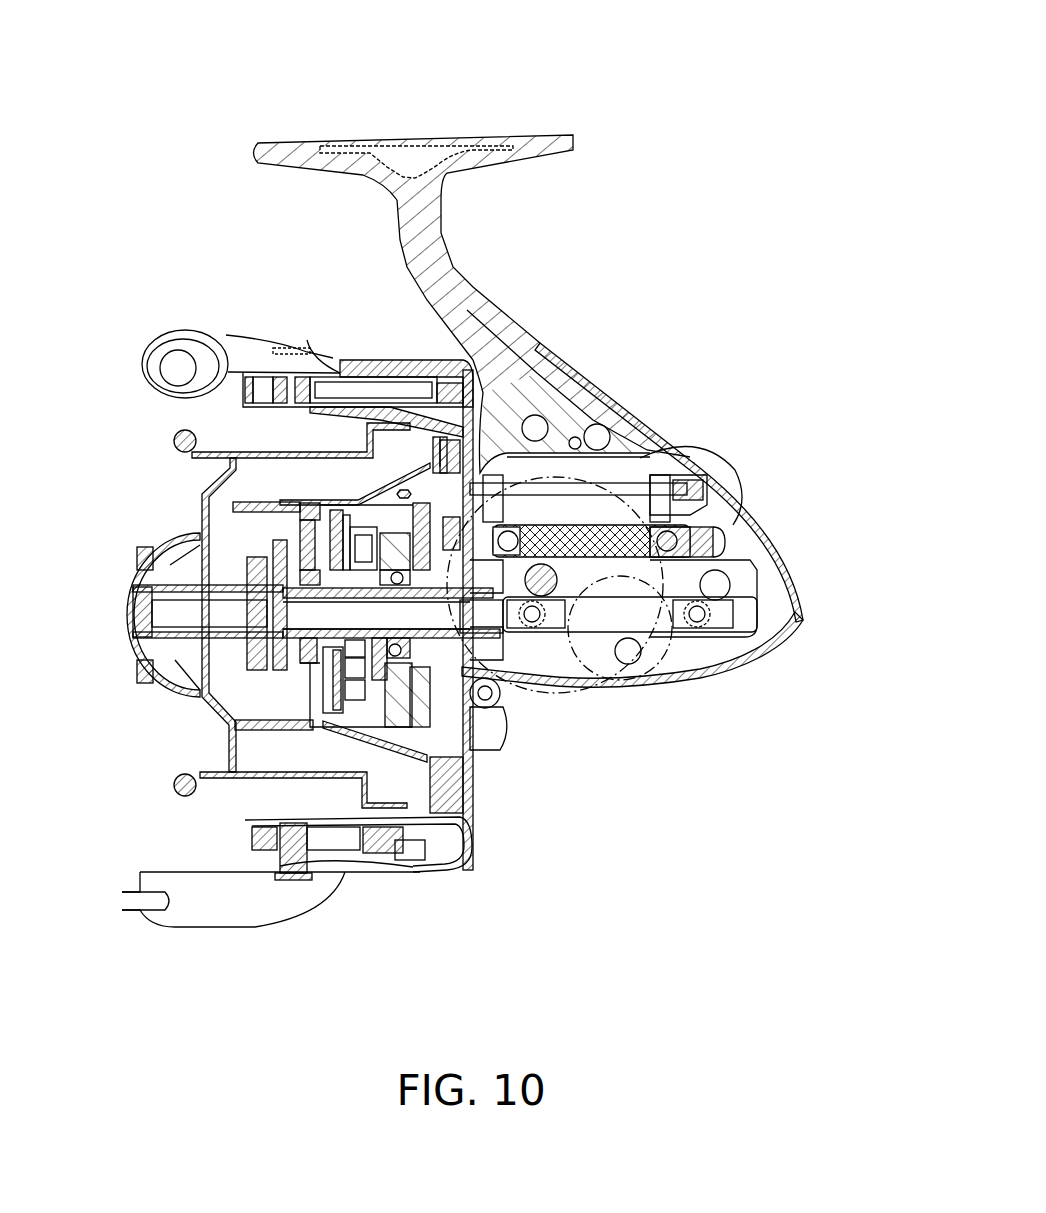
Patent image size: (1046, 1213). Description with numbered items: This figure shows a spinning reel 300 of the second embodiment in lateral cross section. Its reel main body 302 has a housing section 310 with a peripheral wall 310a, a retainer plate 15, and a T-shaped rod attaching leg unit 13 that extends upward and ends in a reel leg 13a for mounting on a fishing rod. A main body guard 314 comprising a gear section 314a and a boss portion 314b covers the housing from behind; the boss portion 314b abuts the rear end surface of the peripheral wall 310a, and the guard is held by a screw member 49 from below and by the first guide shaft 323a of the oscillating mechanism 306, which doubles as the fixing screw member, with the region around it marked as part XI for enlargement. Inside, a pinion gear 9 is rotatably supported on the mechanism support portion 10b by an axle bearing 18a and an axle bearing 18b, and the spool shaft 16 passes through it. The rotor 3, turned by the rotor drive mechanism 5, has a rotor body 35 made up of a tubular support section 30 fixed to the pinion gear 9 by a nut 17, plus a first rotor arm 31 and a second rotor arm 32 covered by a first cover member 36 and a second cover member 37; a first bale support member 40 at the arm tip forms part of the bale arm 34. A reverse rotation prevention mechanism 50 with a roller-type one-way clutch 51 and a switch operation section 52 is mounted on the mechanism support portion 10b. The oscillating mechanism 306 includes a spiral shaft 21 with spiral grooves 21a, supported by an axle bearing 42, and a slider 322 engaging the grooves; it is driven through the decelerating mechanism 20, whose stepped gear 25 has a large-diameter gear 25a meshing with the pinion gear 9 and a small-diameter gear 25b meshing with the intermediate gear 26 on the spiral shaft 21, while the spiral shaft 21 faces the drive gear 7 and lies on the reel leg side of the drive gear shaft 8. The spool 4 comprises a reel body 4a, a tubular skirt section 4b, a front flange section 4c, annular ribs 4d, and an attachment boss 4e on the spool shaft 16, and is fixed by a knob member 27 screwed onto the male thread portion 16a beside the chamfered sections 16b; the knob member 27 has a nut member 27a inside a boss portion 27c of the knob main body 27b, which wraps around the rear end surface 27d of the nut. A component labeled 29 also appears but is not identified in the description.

The spinning reel 300 is at (565, 100).
The reel leg 13a is at (462, 133).
The rod attaching leg unit 13 is at (440, 233).
The reel main body 302 is at (488, 288).
The main body guard 314 is at (599, 367).
The gear section 314a is at (618, 405).
The boss portion 314b is at (695, 445).
The retainer plate 15 is at (773, 540).
The slider 322 is at (693, 480).
The first guide shaft 323a is at (623, 490).
The oscillating mechanism 306 is at (595, 507).
The part XI is at (549, 352).
The stepped gear 25 is at (563, 405).
The large-diameter gear 25a is at (500, 370).
The drive gear 7 is at (600, 690).
The spiral shaft 21 is at (737, 593).
The spiral grooves 21a is at (710, 652).
The screw member 49 is at (683, 660).
The housing section 310 is at (622, 690).
The peripheral wall 310a is at (657, 672).
The drive gear shaft 8 is at (623, 697).
The rotor drive mechanism 5 is at (477, 815).
The rotor body 35 is at (485, 817).
The rotor 3 is at (482, 877).
The spool shaft 16 is at (540, 690).
The switch operation section 52 is at (492, 740).
The axle bearing 18b is at (500, 733).
The pinion gear 9 is at (486, 816).
The axle bearing 18a is at (385, 722).
The bale arm 34 is at (148, 323).
The first bale support member 40 is at (235, 337).
The first rotor arm 31 is at (308, 355).
The first cover member 36 is at (378, 360).
The decelerating mechanism 20 is at (423, 378).
The spool 4 is at (277, 616).
The reel body 4a is at (267, 453).
The tubular skirt section 4b is at (363, 425).
The front flange section 4c is at (192, 435).
The attachment boss 4e is at (201, 530).
The annular ribs 4d is at (305, 462).
The chamfered sections 16b is at (205, 660).
The reverse rotation prevention mechanism 50 is at (308, 730).
The roller-type one-way clutch 51 is at (325, 728).
The tubular support section 30 is at (360, 730).
The knob member 27 is at (174, 530).
The nut member 27a is at (153, 640).
The knob main body 27b is at (150, 540).
The boss portion 27c is at (152, 555).
The rear end surface 27d is at (205, 655).
The male thread portion 16a is at (175, 583).
The nut 17 is at (238, 583).
The rotor nut flange 29 is at (228, 615).
The mechanism support portion 10b is at (300, 502).
The intermediate gear 26 is at (432, 505).
The second cover member 37 is at (390, 868).
The second rotor arm 32 is at (350, 850).
The small-diameter gear 25b is at (463, 832).
The axle bearing 42 is at (227, 910).